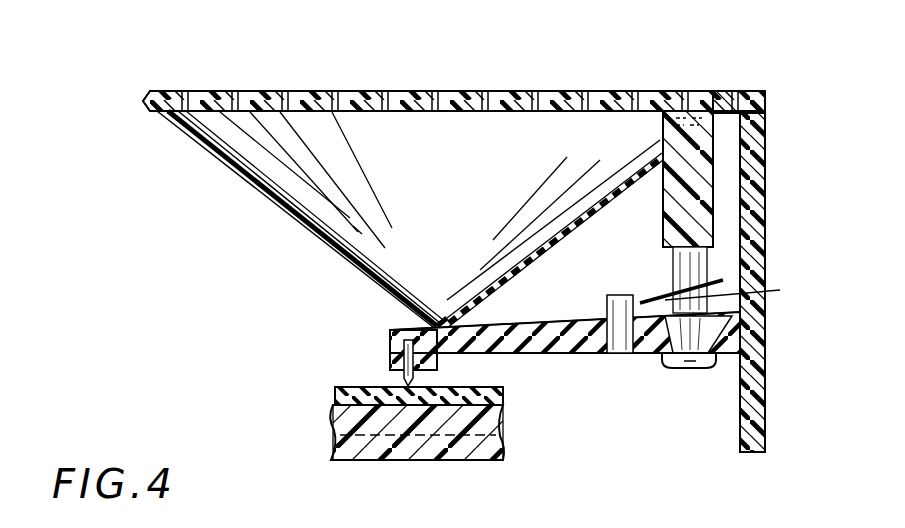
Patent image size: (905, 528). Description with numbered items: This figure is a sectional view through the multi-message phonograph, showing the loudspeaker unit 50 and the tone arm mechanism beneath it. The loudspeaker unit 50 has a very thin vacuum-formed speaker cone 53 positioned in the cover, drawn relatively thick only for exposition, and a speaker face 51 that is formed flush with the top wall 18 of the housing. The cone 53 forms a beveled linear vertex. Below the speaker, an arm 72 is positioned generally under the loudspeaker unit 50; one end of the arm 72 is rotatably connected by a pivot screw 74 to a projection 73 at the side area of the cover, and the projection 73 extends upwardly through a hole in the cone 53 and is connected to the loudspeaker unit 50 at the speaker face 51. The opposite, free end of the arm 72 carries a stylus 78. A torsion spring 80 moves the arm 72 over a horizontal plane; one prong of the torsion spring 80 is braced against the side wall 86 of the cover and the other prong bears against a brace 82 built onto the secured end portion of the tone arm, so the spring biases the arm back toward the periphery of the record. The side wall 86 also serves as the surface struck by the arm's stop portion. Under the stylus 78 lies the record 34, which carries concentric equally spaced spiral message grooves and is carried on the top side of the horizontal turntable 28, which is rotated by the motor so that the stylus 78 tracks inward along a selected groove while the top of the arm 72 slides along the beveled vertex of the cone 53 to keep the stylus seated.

The speaker face 51 is at (377, 90).
The top wall 18 is at (666, 93).
The side wall 86 is at (756, 170).
The projection 73 is at (673, 205).
The speaker cone 53 is at (278, 199).
The loudspeaker unit 50 is at (192, 178).
The arm 72 is at (533, 329).
The brace 82 is at (624, 295).
The pivot screw 74 is at (683, 371).
The torsion spring 80 is at (728, 292).
The stylus 78 is at (402, 378).
The record 34 is at (336, 397).
The turntable 28 is at (506, 428).